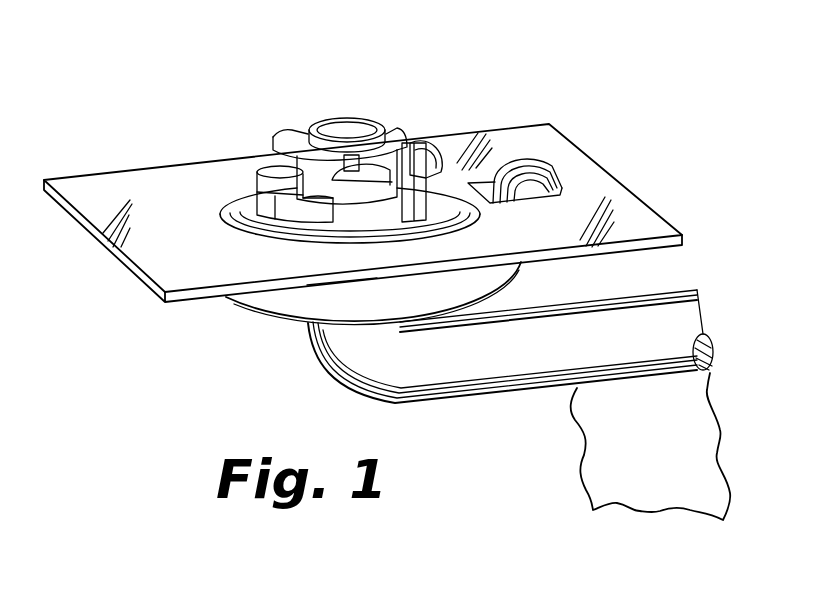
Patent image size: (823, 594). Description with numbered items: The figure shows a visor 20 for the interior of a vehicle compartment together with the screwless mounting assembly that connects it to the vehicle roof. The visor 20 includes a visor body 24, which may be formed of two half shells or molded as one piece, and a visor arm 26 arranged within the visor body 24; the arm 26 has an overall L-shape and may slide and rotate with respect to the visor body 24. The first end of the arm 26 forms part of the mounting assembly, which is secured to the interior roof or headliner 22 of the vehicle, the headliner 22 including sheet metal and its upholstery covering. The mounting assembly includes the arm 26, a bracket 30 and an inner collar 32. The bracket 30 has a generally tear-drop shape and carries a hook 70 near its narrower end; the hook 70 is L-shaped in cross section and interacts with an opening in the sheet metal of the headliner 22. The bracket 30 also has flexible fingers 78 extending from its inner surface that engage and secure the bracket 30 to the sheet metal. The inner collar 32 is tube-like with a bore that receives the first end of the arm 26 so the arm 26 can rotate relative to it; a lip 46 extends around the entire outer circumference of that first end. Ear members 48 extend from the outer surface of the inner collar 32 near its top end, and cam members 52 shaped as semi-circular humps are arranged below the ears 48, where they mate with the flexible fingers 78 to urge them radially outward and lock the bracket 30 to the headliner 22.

The visor 20 is at (527, 505).
The headliner 22 is at (542, 140).
The visor body 24 is at (583, 443).
The visor arm 26 is at (603, 294).
The bracket 30 is at (283, 300).
The inner collar 32 is at (357, 212).
The lip 46 is at (376, 128).
The ear members 48 is at (420, 138).
The cam members 52 is at (375, 197).
The hook 70 is at (560, 183).
The flexible fingers 78 is at (252, 192).